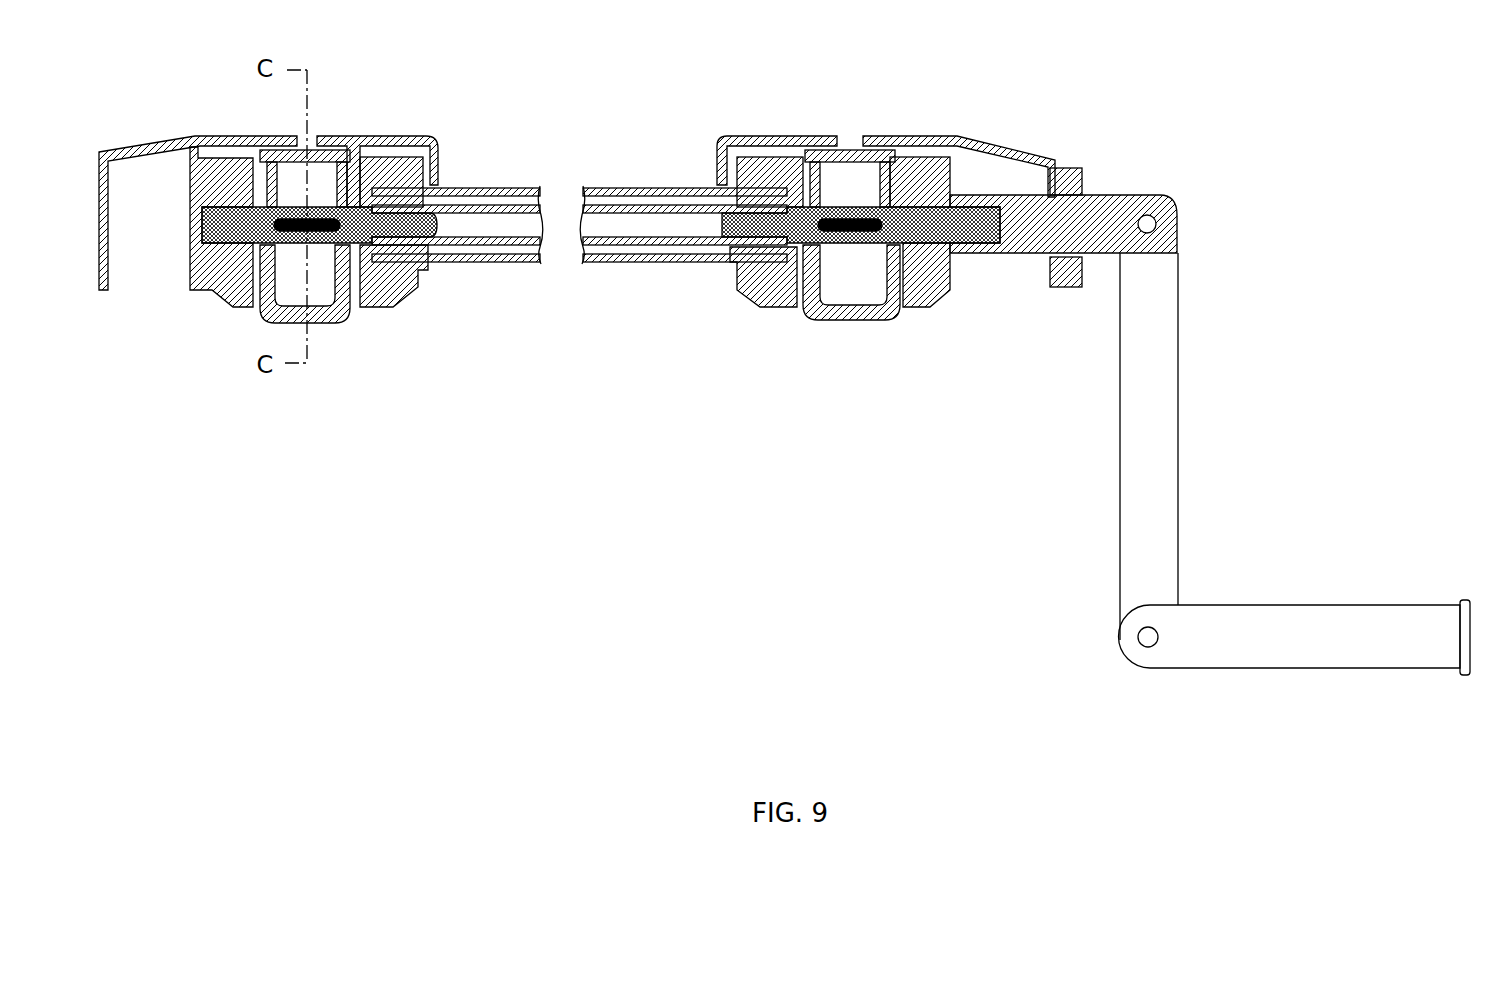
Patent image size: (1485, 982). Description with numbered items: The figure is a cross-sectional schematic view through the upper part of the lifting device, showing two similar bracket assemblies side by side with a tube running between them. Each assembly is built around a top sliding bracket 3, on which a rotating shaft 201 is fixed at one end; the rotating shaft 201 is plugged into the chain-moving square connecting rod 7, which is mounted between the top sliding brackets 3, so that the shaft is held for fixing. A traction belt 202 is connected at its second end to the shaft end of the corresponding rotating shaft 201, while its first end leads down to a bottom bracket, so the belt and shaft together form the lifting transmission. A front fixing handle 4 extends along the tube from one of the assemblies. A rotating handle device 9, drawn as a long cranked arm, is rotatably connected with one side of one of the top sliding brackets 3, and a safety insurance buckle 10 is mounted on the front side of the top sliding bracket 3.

The top sliding bracket 3 is at (403, 138).
The front fixing handle 4 is at (512, 188).
The chain-moving square connecting rod 7 is at (517, 240).
The rotating handle device 9 is at (1317, 417).
The safety insurance buckle 10 is at (850, 320).
The rotating shaft 201 is at (210, 290).
The traction belt 202 is at (310, 180).